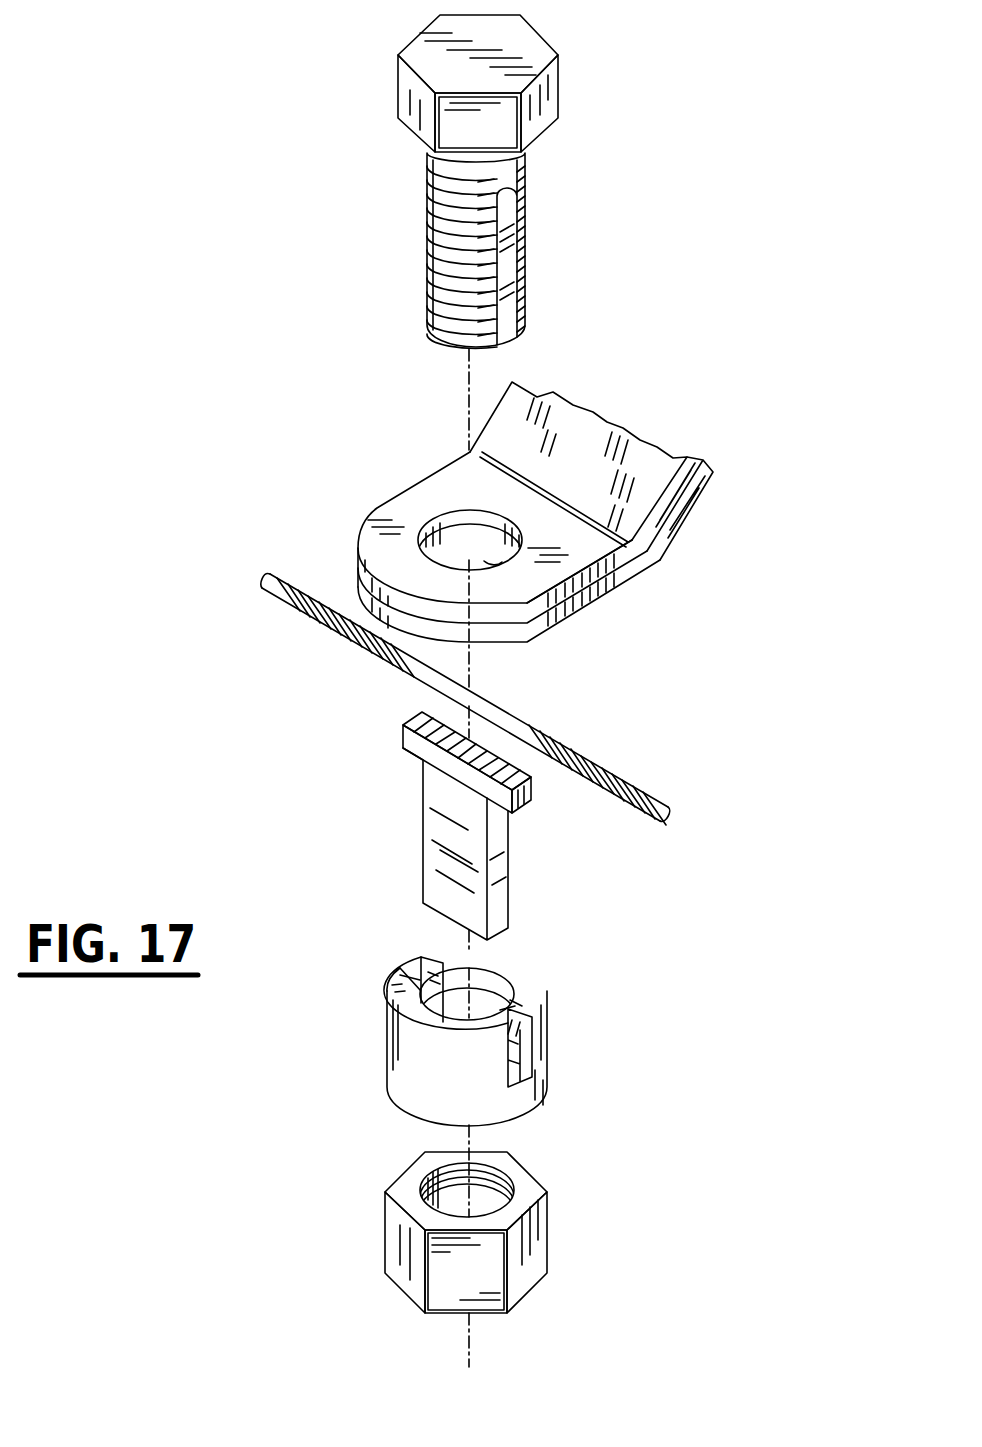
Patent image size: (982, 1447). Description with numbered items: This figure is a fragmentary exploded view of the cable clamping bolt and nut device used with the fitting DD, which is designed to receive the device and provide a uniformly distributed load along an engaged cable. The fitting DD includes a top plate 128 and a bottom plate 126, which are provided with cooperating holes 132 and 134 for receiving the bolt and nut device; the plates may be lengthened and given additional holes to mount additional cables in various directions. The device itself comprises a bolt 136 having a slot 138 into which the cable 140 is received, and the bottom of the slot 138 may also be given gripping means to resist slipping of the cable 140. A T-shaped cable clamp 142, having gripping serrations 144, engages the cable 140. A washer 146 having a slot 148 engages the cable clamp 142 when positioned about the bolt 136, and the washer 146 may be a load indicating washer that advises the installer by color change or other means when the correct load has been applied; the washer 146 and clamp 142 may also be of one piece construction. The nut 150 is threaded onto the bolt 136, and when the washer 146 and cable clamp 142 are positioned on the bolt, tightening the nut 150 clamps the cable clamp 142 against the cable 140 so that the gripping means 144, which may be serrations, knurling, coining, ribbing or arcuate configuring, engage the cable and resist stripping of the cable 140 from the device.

The bolt 136 is at (547, 97).
The slot 138 is at (505, 258).
The top plate 128 is at (423, 473).
The hole 132 is at (447, 538).
The hole 134 is at (493, 560).
The bottom plate 126 is at (602, 598).
The fitting DD is at (641, 414).
The cable 140 is at (607, 770).
The gripping serrations 144 is at (417, 720).
The T-shaped cable clamp 142 is at (437, 838).
The washer 146 is at (397, 1045).
The slot 148 is at (517, 1050).
The nut 150 is at (538, 1230).